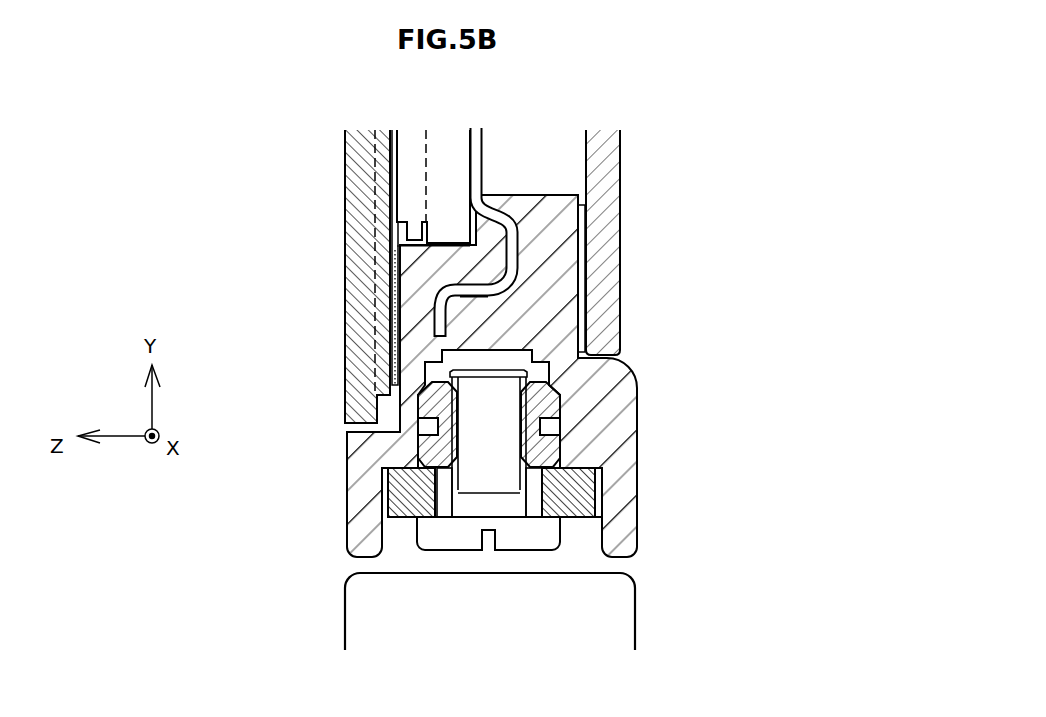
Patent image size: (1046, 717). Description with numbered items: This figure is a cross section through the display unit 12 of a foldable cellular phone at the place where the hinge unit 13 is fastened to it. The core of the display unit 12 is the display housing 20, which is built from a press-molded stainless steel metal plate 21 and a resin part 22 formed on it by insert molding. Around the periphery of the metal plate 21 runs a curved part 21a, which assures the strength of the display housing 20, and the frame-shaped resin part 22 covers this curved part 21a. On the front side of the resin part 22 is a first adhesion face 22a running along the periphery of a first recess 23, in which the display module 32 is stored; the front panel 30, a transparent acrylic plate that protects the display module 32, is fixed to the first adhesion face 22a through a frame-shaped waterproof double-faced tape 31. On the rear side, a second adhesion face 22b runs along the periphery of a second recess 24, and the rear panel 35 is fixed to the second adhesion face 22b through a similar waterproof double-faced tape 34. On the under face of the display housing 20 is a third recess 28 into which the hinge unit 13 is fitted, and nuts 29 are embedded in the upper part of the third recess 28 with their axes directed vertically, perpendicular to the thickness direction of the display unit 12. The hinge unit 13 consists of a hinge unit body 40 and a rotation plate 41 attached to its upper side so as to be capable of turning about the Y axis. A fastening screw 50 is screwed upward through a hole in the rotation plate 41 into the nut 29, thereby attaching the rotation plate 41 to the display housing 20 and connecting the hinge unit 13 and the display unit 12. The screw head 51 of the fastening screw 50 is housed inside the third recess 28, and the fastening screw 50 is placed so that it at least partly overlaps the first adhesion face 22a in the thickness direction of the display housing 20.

The display unit 12 is at (722, 168).
The hinge unit 13 is at (799, 571).
The display housing 20 is at (652, 363).
The metal plate 21 is at (473, 155).
The curved part 21a is at (493, 290).
The resin part 22 is at (620, 402).
The first adhesion face 22a is at (393, 397).
The second adhesion face 22b is at (585, 203).
The first recess 23 is at (518, 197).
The second recess 24 is at (450, 245).
The third recess 28 is at (604, 522).
The nut 29 is at (548, 446).
The front panel 30 is at (363, 316).
The double-faced tape 31 is at (394, 274).
The display module 32 is at (408, 195).
The double-faced tape 34 is at (577, 229).
The rear panel 35 is at (606, 269).
The hinge unit body 40 is at (602, 612).
The rotation plate 41 is at (582, 497).
The fastening screw 50 is at (488, 505).
The screw head 51 is at (462, 550).